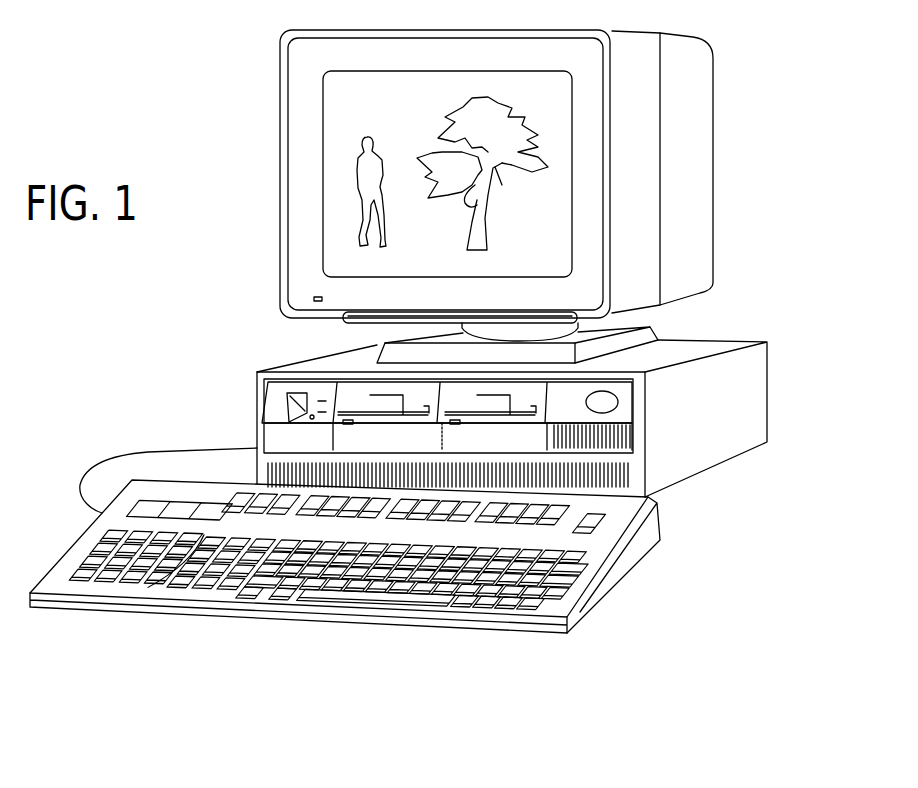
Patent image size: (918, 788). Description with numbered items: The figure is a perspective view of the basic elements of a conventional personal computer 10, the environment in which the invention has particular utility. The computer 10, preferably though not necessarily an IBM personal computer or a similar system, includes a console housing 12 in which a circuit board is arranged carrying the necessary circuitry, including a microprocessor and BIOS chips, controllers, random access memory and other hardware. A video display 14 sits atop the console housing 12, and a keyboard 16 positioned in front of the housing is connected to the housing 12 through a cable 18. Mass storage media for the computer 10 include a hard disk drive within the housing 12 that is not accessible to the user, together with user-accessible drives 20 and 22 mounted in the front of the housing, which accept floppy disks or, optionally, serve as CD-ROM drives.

The computer 10 is at (178, 206).
The console housing 12 is at (687, 432).
The video display 14 is at (713, 97).
The keyboard 16 is at (488, 635).
The cable 18 is at (148, 452).
The CD-ROM drive 20 is at (523, 400).
The CD-ROM drive 22 is at (390, 393).